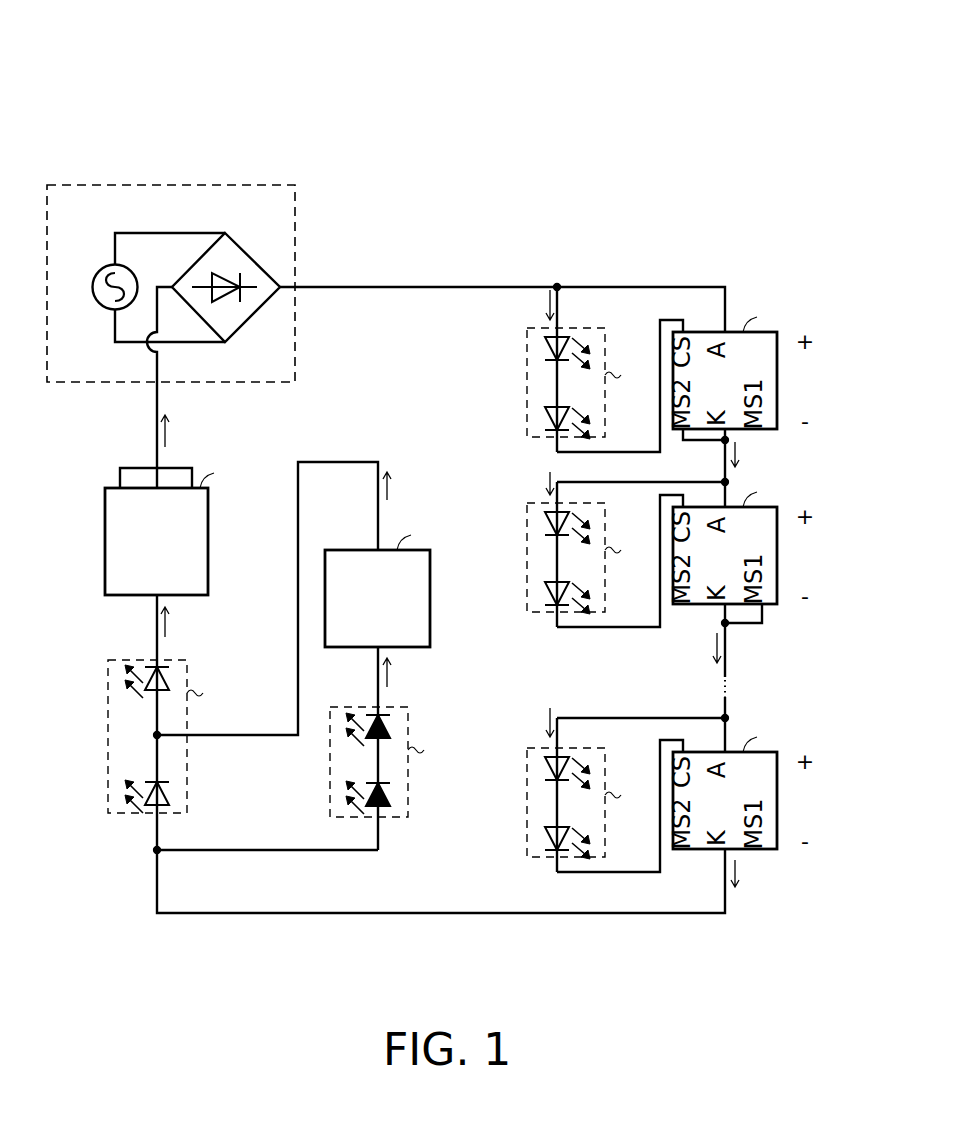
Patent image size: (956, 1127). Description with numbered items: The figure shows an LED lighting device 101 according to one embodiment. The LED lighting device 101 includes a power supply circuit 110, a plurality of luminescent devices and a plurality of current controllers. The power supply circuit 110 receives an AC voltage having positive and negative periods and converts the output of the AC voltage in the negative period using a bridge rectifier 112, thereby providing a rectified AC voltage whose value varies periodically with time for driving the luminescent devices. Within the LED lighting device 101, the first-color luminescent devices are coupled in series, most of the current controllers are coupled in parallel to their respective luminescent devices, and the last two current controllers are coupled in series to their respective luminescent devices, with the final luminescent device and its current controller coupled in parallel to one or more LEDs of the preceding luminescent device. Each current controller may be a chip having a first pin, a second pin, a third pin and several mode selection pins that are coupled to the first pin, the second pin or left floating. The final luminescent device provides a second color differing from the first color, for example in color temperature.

The LED lighting device 101 is at (678, 78).
The power supply circuit 110 is at (155, 183).
The bridge rectifier 112 is at (253, 257).